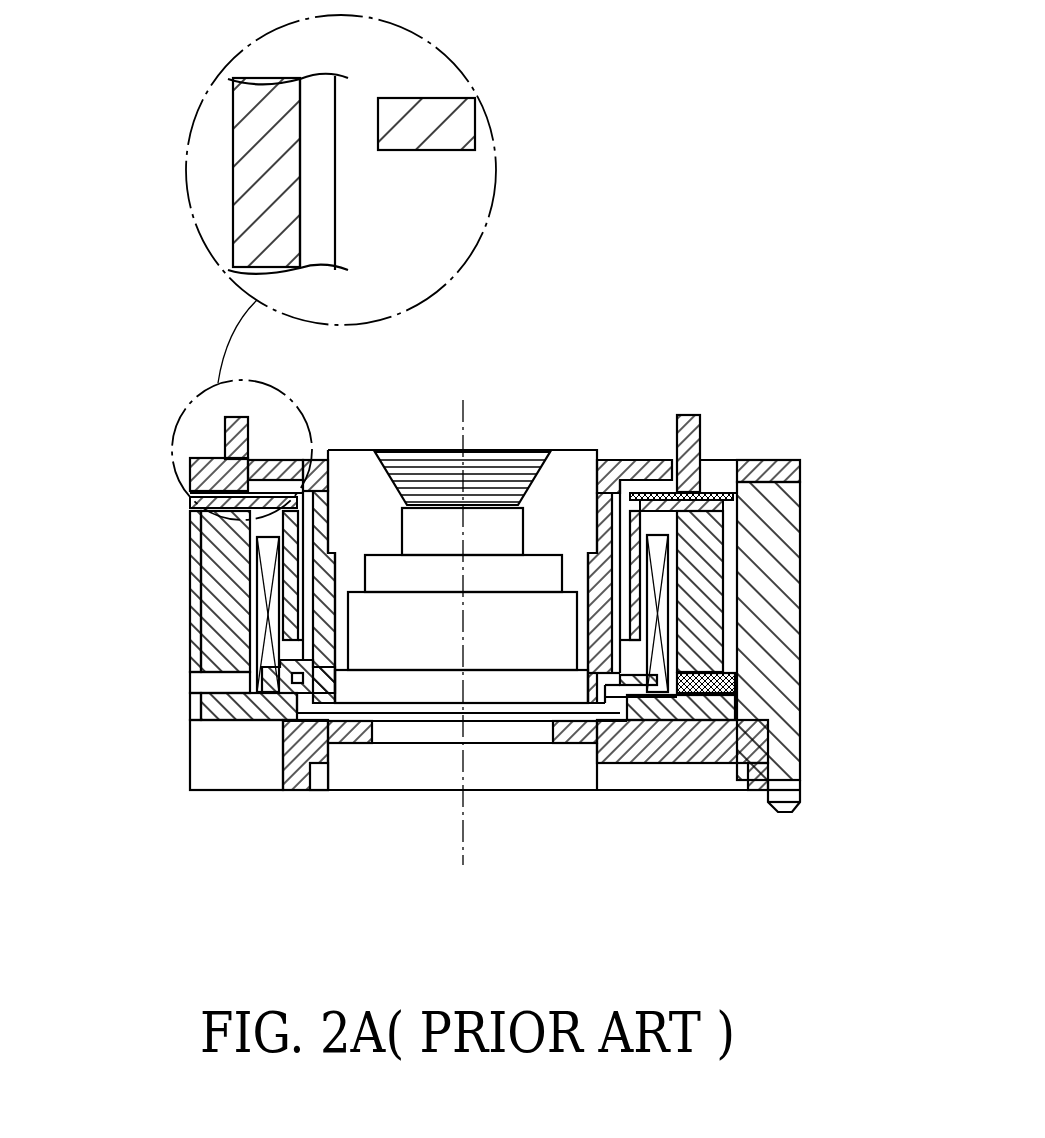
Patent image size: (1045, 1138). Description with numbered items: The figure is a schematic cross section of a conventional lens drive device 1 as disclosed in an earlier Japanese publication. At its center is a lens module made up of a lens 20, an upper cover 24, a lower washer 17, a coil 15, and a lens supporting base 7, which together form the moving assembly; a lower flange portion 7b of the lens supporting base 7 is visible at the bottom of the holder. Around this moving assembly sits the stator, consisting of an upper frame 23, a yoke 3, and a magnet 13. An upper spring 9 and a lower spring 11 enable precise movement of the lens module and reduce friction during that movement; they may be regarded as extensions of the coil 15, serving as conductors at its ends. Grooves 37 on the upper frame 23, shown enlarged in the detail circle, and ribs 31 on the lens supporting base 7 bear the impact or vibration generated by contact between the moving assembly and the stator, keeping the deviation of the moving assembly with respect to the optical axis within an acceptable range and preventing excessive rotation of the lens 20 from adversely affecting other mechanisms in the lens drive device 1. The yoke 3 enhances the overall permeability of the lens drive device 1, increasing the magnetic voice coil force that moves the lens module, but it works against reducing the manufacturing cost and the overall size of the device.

The lens drive device 1 is at (140, 538).
The yoke 3 is at (737, 650).
The lens supporting base 7 is at (597, 673).
The lens holder bottom flange 7b is at (263, 685).
The upper spring 9 is at (665, 460).
The lower spring 11 is at (623, 693).
The magnet 13 is at (700, 541).
The coil 15 is at (658, 677).
The lower washer 17 is at (737, 679).
The lens 20 is at (582, 655).
The upper frame 23 is at (262, 188).
The upper cover 24 is at (460, 122).
The ribs 31 is at (292, 610).
The grooves 37 is at (313, 110).